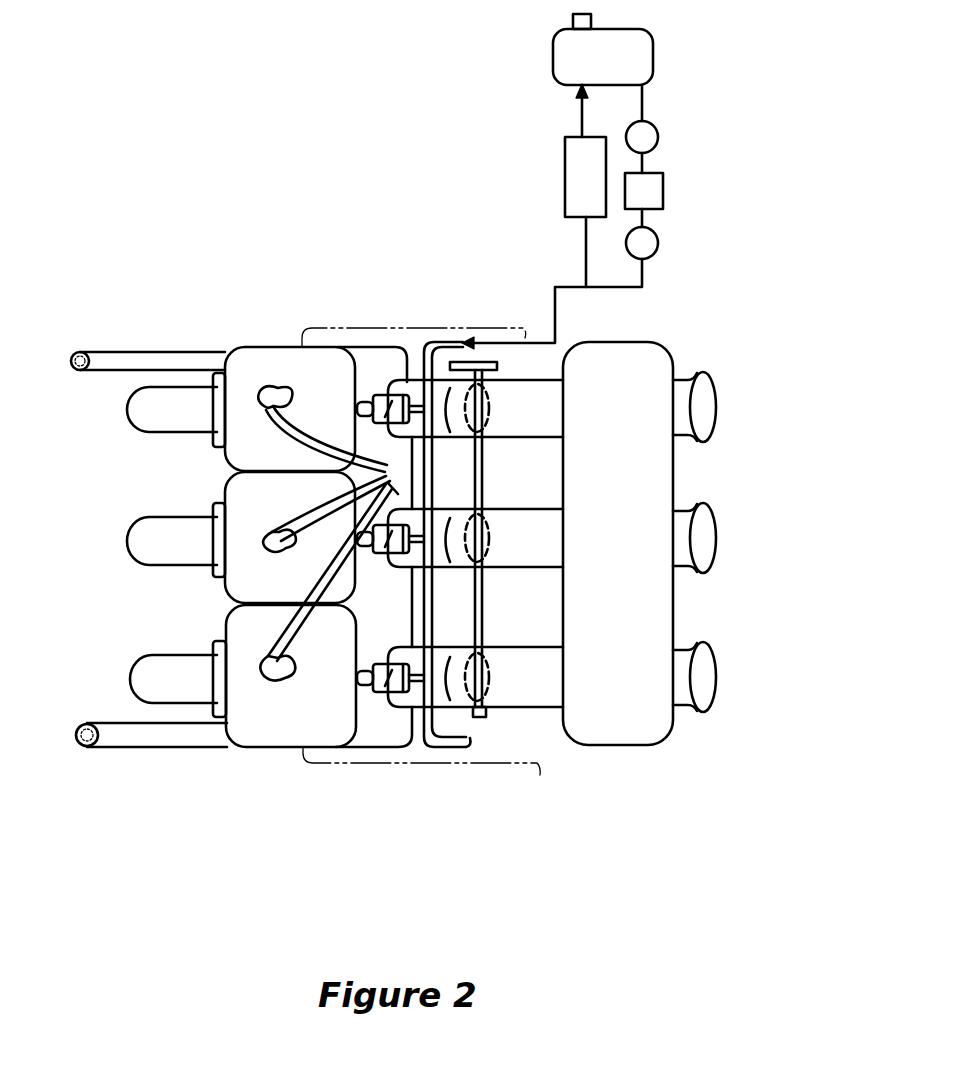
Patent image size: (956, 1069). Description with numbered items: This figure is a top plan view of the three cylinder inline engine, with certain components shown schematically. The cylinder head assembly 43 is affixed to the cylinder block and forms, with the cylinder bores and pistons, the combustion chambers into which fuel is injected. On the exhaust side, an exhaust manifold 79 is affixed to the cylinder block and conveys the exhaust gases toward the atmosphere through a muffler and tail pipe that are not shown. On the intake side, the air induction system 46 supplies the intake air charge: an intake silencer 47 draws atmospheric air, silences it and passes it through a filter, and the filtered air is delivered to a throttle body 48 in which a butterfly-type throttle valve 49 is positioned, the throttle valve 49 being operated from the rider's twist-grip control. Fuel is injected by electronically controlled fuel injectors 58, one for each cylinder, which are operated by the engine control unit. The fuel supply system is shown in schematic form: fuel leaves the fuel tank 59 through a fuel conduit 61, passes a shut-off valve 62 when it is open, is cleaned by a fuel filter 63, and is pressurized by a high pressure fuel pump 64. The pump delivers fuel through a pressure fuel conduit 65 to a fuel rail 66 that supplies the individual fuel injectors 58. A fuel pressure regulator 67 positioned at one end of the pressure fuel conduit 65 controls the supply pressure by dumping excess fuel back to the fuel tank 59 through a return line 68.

The cylinder head assembly 43 is at (233, 463).
The air induction system 46 is at (742, 344).
The intake silencer 47 is at (673, 467).
The throttle body 48 is at (545, 437).
The throttle valve 49 is at (478, 408).
The fuel injector 58 is at (395, 385).
The fuel tank 59 is at (653, 57).
The fuel conduit 61 is at (643, 103).
The shut-off valve 62 is at (658, 137).
The fuel filter 63 is at (663, 190).
The high pressure fuel pump 64 is at (658, 243).
The pressure fuel conduit 65 is at (630, 288).
The fuel rail 66 is at (483, 608).
The fuel pressure regulator 67 is at (565, 168).
The return line 68 is at (582, 115).
The exhaust manifold 79 is at (135, 410).